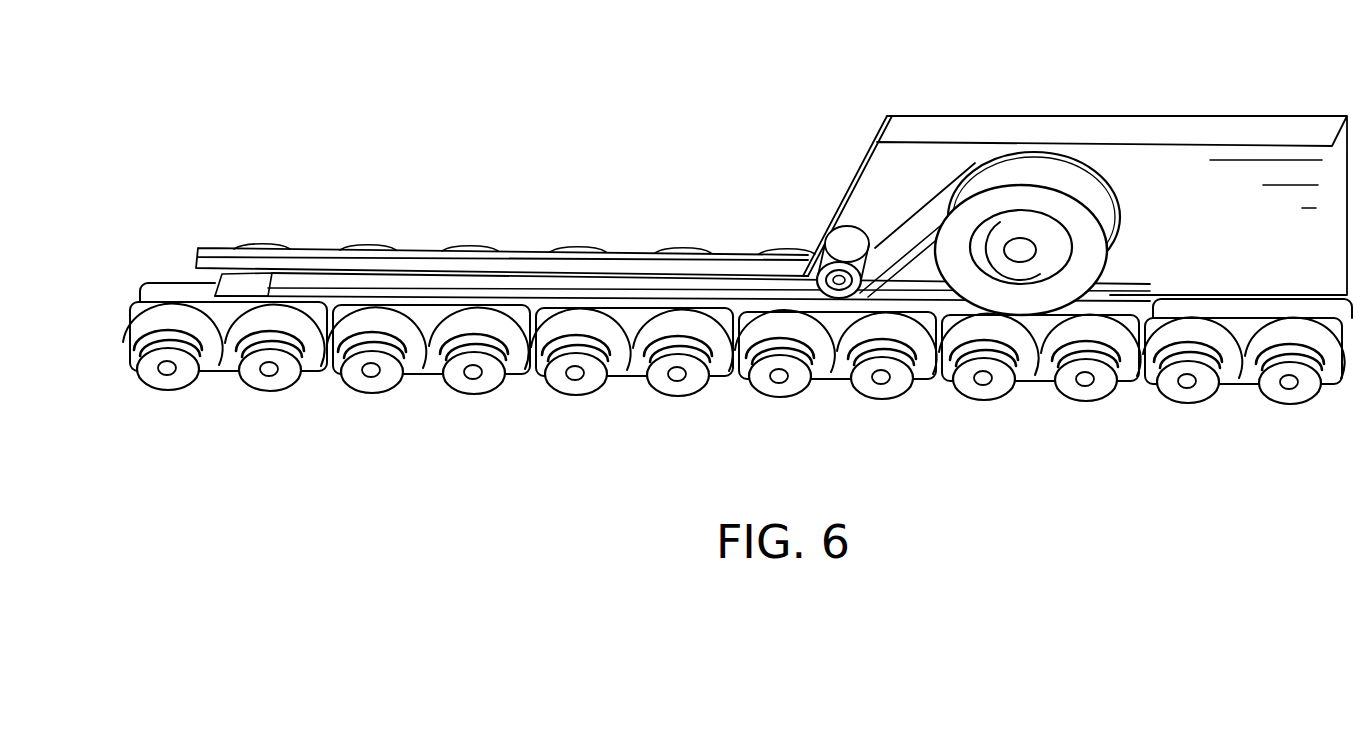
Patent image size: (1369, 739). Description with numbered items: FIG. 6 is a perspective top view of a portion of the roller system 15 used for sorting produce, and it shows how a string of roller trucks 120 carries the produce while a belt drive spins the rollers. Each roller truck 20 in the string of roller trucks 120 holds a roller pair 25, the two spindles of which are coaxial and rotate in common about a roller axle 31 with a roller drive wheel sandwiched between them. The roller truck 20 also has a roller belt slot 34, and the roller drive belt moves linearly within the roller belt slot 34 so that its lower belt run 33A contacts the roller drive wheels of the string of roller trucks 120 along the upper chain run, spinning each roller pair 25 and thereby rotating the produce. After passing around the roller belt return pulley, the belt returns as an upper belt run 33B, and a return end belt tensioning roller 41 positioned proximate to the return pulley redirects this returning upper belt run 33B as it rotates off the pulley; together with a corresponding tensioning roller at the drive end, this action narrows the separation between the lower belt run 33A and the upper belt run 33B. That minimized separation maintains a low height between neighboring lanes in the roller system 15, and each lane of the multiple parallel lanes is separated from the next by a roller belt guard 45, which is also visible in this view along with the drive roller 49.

The roller system 15 is at (737, 247).
The roller truck 20 is at (1258, 386).
The roller pair 25 is at (799, 380).
The roller axle 31 is at (680, 378).
The lower belt run 33A is at (228, 288).
The upper belt run 33B is at (430, 283).
The roller belt slot 34 is at (1147, 308).
The return end belt tensioning roller 41 is at (820, 246).
The roller belt guard 45 is at (527, 262).
The drive roller 49 is at (1003, 195).
The string of roller trucks 120 is at (733, 373).